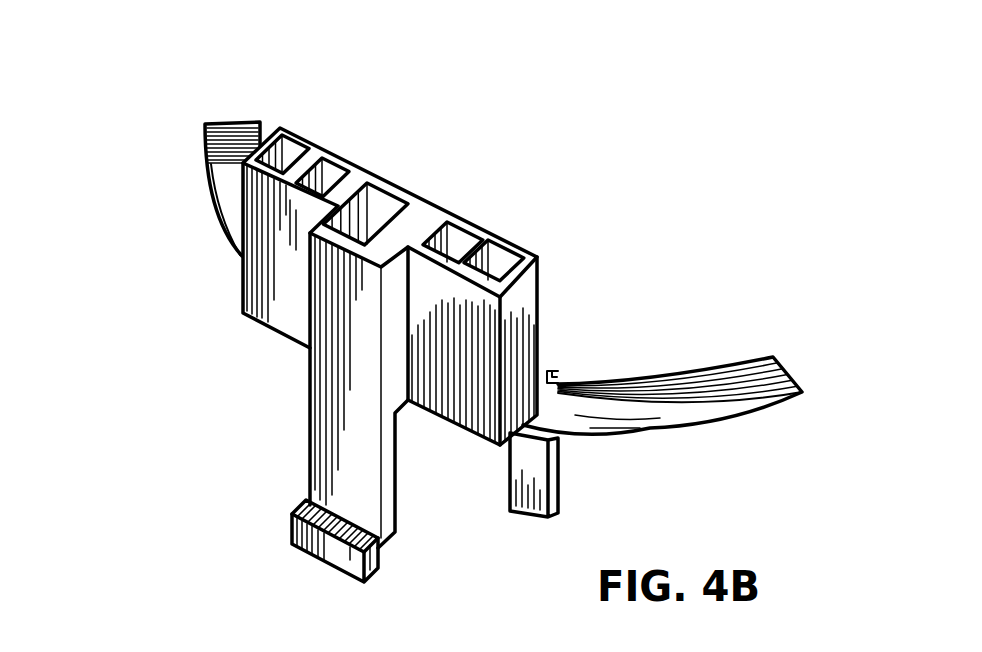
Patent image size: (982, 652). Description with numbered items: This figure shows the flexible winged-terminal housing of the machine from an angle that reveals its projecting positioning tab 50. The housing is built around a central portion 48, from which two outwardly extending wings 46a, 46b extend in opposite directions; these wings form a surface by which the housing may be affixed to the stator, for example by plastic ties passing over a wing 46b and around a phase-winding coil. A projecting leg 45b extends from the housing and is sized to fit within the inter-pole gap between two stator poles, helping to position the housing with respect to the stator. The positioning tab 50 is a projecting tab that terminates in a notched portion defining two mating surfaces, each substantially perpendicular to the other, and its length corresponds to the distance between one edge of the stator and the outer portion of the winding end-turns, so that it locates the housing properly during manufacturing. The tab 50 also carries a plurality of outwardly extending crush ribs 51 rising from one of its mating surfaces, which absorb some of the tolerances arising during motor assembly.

The central portion 48 is at (282, 124).
The outwardly extending wing 46a is at (200, 159).
The outwardly extending wing 46b is at (599, 375).
The projecting leg 45b is at (547, 362).
The crush ribs 51 is at (303, 503).
The positioning tab 50 is at (376, 569).